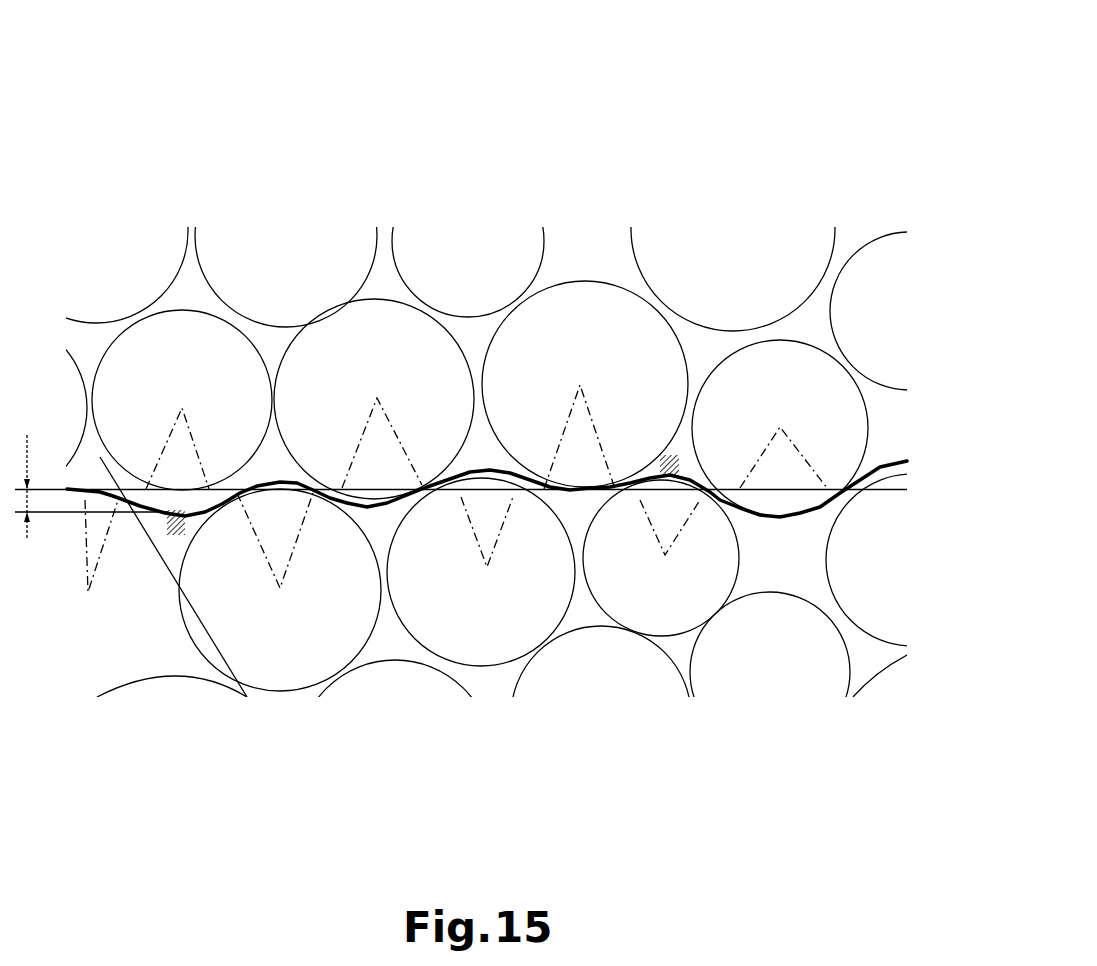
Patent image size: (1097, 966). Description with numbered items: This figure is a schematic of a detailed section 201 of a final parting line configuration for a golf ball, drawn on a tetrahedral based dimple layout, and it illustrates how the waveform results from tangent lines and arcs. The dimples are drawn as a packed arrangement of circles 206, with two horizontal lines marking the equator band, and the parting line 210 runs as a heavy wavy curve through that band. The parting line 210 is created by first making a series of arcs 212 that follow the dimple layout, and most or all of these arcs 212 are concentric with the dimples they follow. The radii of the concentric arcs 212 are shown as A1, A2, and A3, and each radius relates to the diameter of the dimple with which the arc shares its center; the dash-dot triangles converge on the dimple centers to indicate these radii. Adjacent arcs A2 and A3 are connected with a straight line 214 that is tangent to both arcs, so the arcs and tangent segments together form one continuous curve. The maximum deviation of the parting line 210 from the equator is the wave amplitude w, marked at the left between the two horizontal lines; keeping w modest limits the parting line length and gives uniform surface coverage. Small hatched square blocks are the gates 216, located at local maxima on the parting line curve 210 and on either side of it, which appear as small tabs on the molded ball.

The detailed section 201 is at (683, 140).
The particle 206 is at (280, 505).
The parting line 210 is at (785, 528).
The arcs 212 is at (679, 487).
The straight line 214 is at (530, 472).
The gates 216 is at (174, 538).
The radius of concentric arc A1 is at (489, 617).
The radius of concentric arc A2 is at (549, 582).
The radius of concentric arc A3 is at (628, 585).
The wave amplitude w is at (27, 487).